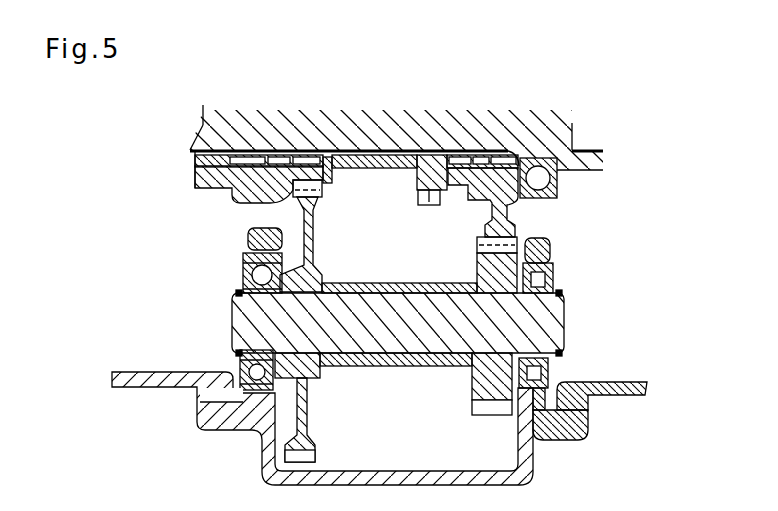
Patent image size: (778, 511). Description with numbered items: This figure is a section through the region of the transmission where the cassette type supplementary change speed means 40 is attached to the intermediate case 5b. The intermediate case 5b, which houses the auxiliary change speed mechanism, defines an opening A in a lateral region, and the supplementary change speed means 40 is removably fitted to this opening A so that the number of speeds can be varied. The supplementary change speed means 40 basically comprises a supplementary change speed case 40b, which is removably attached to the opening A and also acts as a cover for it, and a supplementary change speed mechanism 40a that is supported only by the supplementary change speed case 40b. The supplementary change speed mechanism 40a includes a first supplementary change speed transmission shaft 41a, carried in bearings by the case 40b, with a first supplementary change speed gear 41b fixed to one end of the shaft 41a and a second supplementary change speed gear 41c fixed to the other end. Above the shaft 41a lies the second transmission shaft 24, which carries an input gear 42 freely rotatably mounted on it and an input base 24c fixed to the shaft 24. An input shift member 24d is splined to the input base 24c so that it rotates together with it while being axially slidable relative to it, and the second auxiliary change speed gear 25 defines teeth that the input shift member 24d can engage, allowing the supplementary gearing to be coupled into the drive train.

The second transmission shaft 24 is at (205, 133).
The second auxiliary change speed gear 25 is at (212, 190).
The input base 24c is at (417, 188).
The input shift member 24d is at (432, 206).
The input gear 42 is at (518, 230).
The first supplementary change speed transmission shaft 41a is at (232, 308).
The first supplementary change speed gear 41b is at (305, 396).
The second supplementary change speed gear 41c is at (472, 387).
The intermediate case 5b is at (125, 372).
The opening A is at (235, 370).
The supplementary change speed mechanism 40a is at (572, 349).
The supplementary change speed case 40b is at (588, 426).
The cassette type supplementary change speed means 40 is at (633, 393).